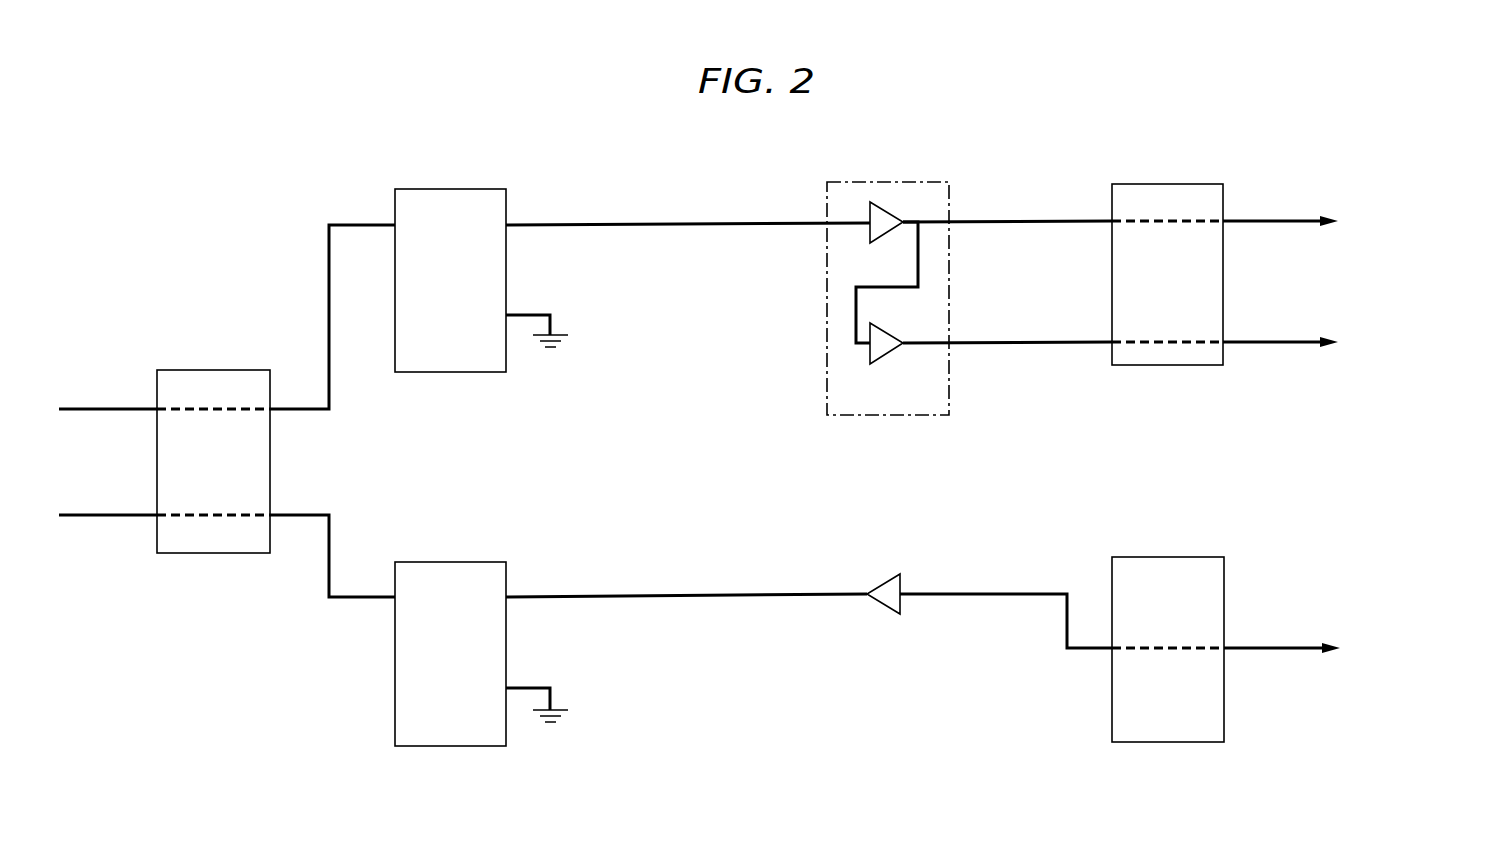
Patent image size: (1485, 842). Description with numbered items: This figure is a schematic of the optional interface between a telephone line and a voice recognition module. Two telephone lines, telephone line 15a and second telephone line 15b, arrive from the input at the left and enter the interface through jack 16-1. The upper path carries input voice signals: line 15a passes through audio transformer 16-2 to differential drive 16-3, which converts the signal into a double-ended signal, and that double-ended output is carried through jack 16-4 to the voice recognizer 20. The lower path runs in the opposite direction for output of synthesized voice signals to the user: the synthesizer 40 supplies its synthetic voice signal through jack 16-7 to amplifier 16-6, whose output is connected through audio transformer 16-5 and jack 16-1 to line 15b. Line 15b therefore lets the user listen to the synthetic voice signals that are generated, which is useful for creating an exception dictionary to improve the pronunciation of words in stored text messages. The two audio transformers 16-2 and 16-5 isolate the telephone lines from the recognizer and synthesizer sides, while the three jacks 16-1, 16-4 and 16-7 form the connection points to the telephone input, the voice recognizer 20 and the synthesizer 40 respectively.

The telephone line 15a is at (90, 408).
The second telephone line 15b is at (90, 514).
The jack 16-1 is at (235, 472).
The audio transformer 16-2 is at (473, 311).
The differential drive 16-3 is at (911, 394).
The jack 16-4 is at (1190, 285).
The audio transformer 16-5 is at (473, 683).
The amplifier 16-6 is at (882, 591).
The jack 16-7 is at (1195, 619).
The voice recognizer 20 is at (1407, 286).
The synthesizer 40 is at (1406, 672).